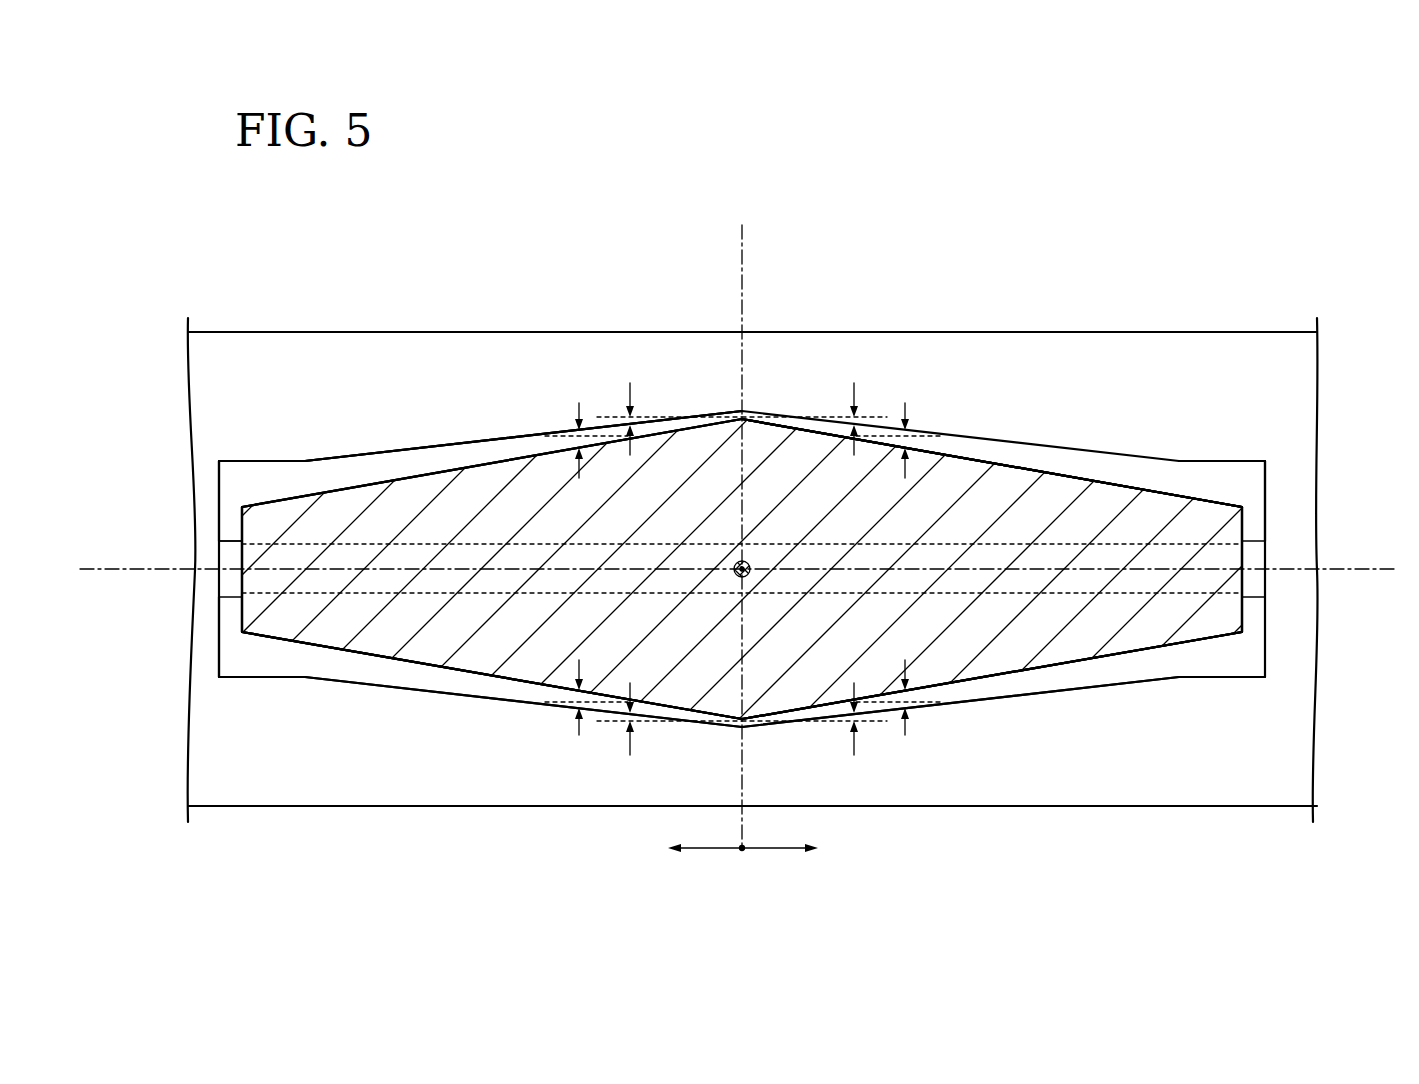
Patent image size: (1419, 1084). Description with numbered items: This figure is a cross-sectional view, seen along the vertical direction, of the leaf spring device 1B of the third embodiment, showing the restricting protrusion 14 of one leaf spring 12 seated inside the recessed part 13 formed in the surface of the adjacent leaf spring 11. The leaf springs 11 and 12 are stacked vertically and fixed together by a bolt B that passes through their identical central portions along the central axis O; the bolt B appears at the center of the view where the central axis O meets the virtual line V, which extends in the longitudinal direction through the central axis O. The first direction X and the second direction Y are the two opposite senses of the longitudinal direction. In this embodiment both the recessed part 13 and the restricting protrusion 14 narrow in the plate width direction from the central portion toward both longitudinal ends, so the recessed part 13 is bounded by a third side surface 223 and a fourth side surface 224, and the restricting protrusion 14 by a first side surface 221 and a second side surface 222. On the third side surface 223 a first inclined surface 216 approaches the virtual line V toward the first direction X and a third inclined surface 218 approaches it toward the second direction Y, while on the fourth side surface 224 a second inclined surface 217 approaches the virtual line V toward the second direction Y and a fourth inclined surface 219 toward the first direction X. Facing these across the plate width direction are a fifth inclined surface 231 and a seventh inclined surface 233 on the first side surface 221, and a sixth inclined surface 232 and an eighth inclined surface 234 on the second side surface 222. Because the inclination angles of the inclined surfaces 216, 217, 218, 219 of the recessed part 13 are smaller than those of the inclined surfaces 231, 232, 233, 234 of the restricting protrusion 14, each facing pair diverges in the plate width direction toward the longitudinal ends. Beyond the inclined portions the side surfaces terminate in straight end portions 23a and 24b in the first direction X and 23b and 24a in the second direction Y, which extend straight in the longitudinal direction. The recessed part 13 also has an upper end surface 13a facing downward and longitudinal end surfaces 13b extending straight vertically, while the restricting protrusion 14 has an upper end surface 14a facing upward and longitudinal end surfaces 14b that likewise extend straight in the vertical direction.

The leaf spring device 1B is at (1307, 232).
The leaf spring 11 is at (1190, 322).
The leaf spring 12 is at (742, 569).
The recessed part 13 is at (1256, 657).
The upper end surface 13a is at (231, 548).
The end surfaces 13b is at (220, 637).
The restricting protrusion 14 is at (1228, 484).
The upper end surface 14a is at (985, 563).
The end surfaces 14b is at (242, 565).
The end portion 23a is at (1186, 461).
The end portion 23b is at (244, 461).
The end portion 24a is at (277, 677).
The end portion 24b is at (1212, 677).
The first inclined surface 216 is at (958, 456).
The second inclined surface 217 is at (475, 680).
The third inclined surface 218 is at (516, 440).
The fourth inclined surface 219 is at (1048, 683).
The first side surface 221 is at (1075, 464).
The second side surface 222 is at (995, 689).
The third side surface 223 is at (457, 458).
The fourth side surface 224 is at (398, 674).
The fifth inclined surface 231 is at (1114, 484).
The sixth inclined surface 232 is at (368, 655).
The seventh inclined surface 233 is at (371, 484).
The eighth inclined surface 234 is at (1115, 655).
The central axis O is at (745, 560).
The bolt B is at (748, 577).
The virtual line V is at (749, 568).
The first direction X is at (791, 848).
The second direction Y is at (694, 848).